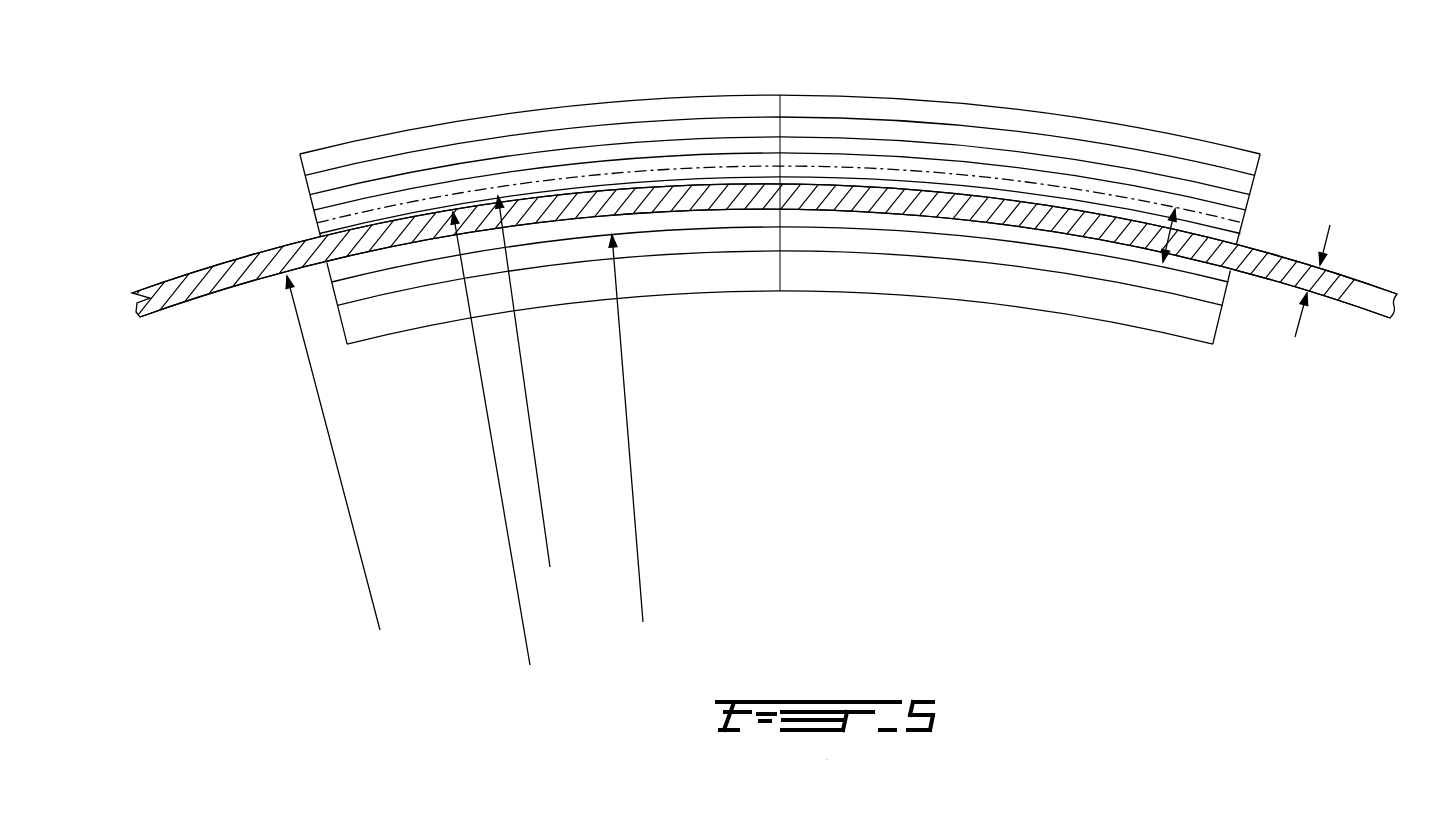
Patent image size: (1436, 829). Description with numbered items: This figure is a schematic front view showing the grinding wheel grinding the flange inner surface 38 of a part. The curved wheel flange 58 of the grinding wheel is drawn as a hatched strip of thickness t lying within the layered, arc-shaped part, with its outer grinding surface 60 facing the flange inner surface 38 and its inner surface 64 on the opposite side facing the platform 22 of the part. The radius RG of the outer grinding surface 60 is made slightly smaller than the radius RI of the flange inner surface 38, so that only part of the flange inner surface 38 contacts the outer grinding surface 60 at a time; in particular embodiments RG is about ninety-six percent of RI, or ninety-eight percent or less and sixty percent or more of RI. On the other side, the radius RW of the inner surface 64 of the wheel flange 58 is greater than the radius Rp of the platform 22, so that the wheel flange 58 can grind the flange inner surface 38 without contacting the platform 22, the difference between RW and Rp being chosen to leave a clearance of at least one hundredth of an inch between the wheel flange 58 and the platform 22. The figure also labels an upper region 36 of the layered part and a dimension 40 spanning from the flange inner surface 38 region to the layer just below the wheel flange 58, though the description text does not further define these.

The platform 22 is at (1160, 278).
The upper die layers 36 is at (1107, 153).
The flange inner surface 38 is at (1223, 220).
The gap dimension 40 is at (1180, 224).
The wheel flange 58 is at (1376, 312).
The outer grinding surface 60 is at (1347, 273).
The inner surface 64 is at (1347, 304).
The sheet thickness t is at (1308, 299).
The radius of the inner surface of the wheel flange RW is at (356, 540).
The radius of the outer grinding surface RG is at (490, 442).
The radius of the flange inner surface RI is at (525, 389).
The radius of the platform Rp is at (639, 563).